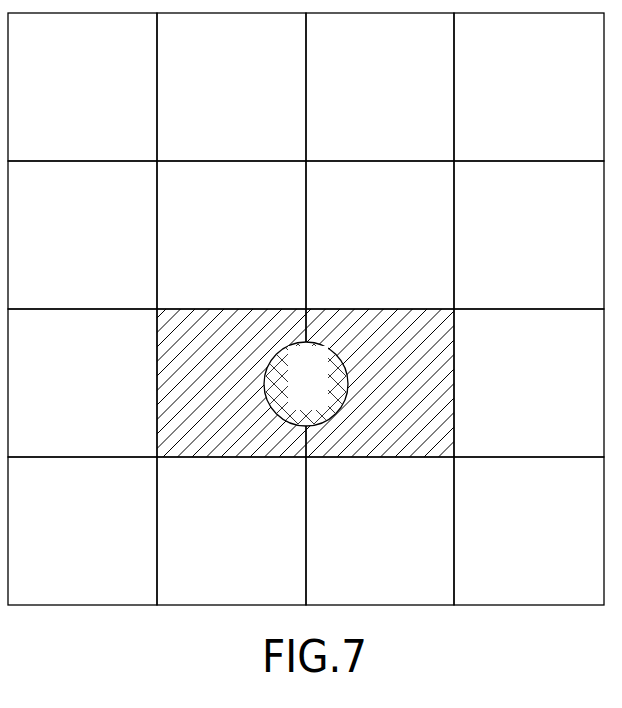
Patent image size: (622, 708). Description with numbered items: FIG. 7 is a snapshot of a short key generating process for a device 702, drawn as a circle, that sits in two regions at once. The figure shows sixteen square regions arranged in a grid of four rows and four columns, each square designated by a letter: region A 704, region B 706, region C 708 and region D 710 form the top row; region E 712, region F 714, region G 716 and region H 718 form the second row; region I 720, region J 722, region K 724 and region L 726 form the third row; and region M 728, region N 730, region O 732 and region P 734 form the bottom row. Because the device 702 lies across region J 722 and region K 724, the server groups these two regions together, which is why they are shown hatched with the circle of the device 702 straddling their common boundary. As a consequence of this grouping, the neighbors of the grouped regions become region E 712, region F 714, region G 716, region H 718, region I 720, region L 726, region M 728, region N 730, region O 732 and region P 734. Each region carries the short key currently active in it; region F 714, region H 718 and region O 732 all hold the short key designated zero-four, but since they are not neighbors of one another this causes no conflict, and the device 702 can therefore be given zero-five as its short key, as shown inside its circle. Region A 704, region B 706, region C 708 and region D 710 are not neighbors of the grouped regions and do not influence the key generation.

The device 702 is at (326, 371).
The region A 704 is at (125, 146).
The region B 706 is at (274, 146).
The region C 708 is at (423, 146).
The region D 710 is at (571, 146).
The region E 712 is at (125, 294).
The region F 714 is at (274, 294).
The region G 716 is at (423, 294).
The region H 718 is at (571, 294).
The region I 720 is at (125, 442).
The region J 722 is at (274, 442).
The region K 724 is at (423, 442).
The region L 726 is at (571, 442).
The region M 728 is at (125, 590).
The region N 730 is at (274, 590).
The region O 732 is at (423, 590).
The region P 734 is at (571, 590).